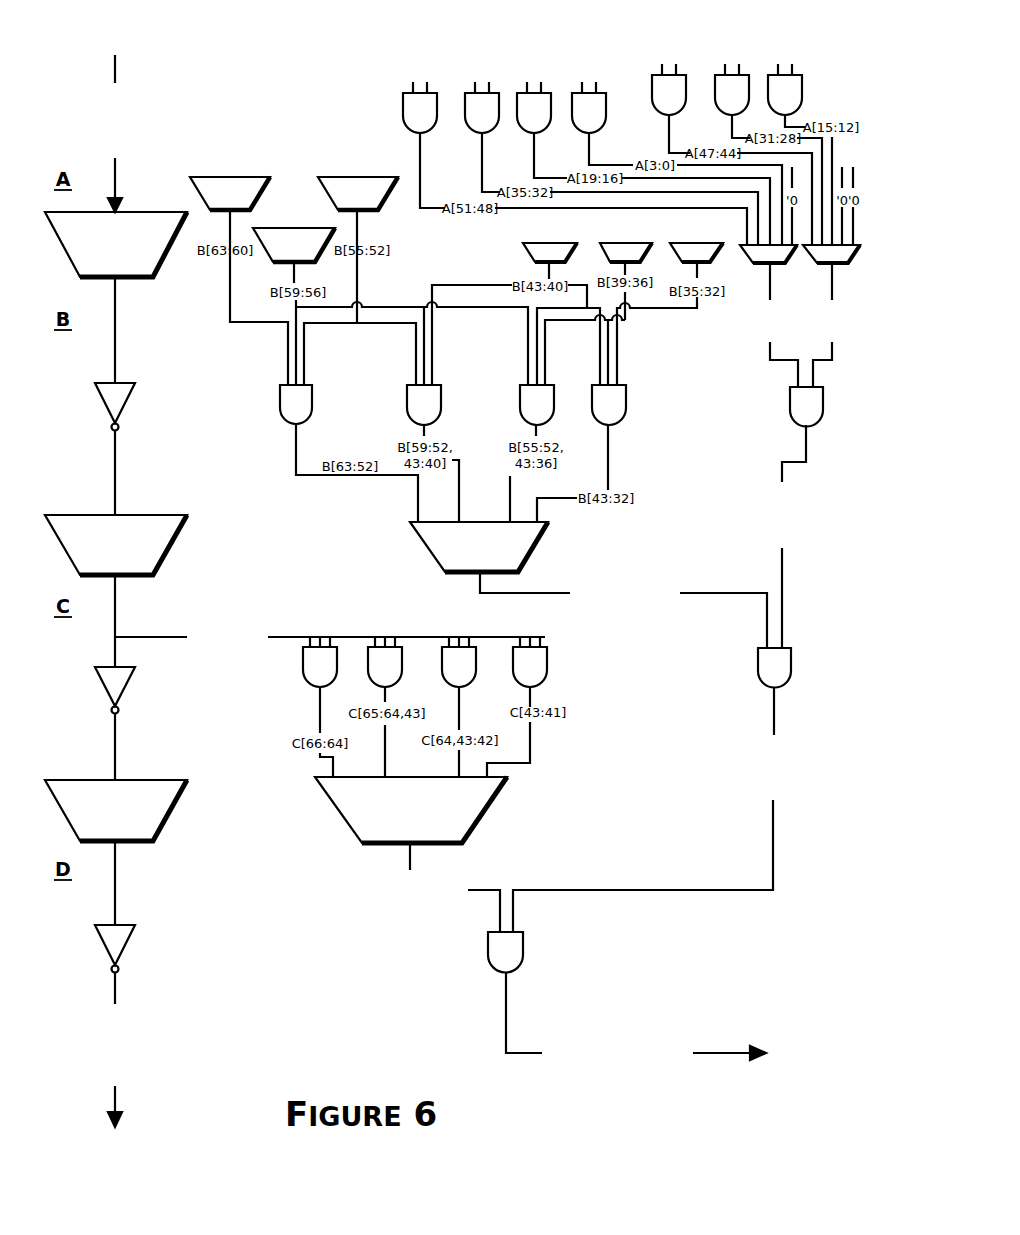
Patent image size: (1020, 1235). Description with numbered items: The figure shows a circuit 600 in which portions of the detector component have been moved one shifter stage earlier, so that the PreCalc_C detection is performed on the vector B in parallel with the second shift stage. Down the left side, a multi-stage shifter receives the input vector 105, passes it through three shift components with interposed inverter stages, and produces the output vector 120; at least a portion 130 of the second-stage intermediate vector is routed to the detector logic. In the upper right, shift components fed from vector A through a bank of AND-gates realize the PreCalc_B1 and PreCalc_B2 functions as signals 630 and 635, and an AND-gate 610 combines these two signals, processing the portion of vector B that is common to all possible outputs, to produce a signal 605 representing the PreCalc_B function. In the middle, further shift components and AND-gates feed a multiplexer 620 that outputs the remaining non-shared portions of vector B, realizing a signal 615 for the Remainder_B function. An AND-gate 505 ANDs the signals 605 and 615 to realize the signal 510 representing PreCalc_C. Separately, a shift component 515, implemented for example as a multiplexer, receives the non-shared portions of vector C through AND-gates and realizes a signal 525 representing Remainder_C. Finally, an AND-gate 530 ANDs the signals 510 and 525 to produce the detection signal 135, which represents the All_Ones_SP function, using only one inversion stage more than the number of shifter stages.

The input vector 105 is at (101, 156).
The output vector 120 is at (101, 1078).
The portion 130 is at (214, 660).
The circuit 600 is at (216, 98).
The multiplexer 620 is at (468, 552).
The signal 615 is at (611, 616).
The signal 630 is at (760, 341).
The signal 635 is at (825, 341).
The AND-gate 610 is at (780, 398).
The signal 605 is at (766, 545).
The AND-gate 505 is at (753, 675).
The signal 510 is at (759, 798).
The shift component 515 is at (401, 816).
The signal 525 is at (399, 915).
The AND-gate 530 is at (535, 940).
The detection signal 135 is at (603, 1104).